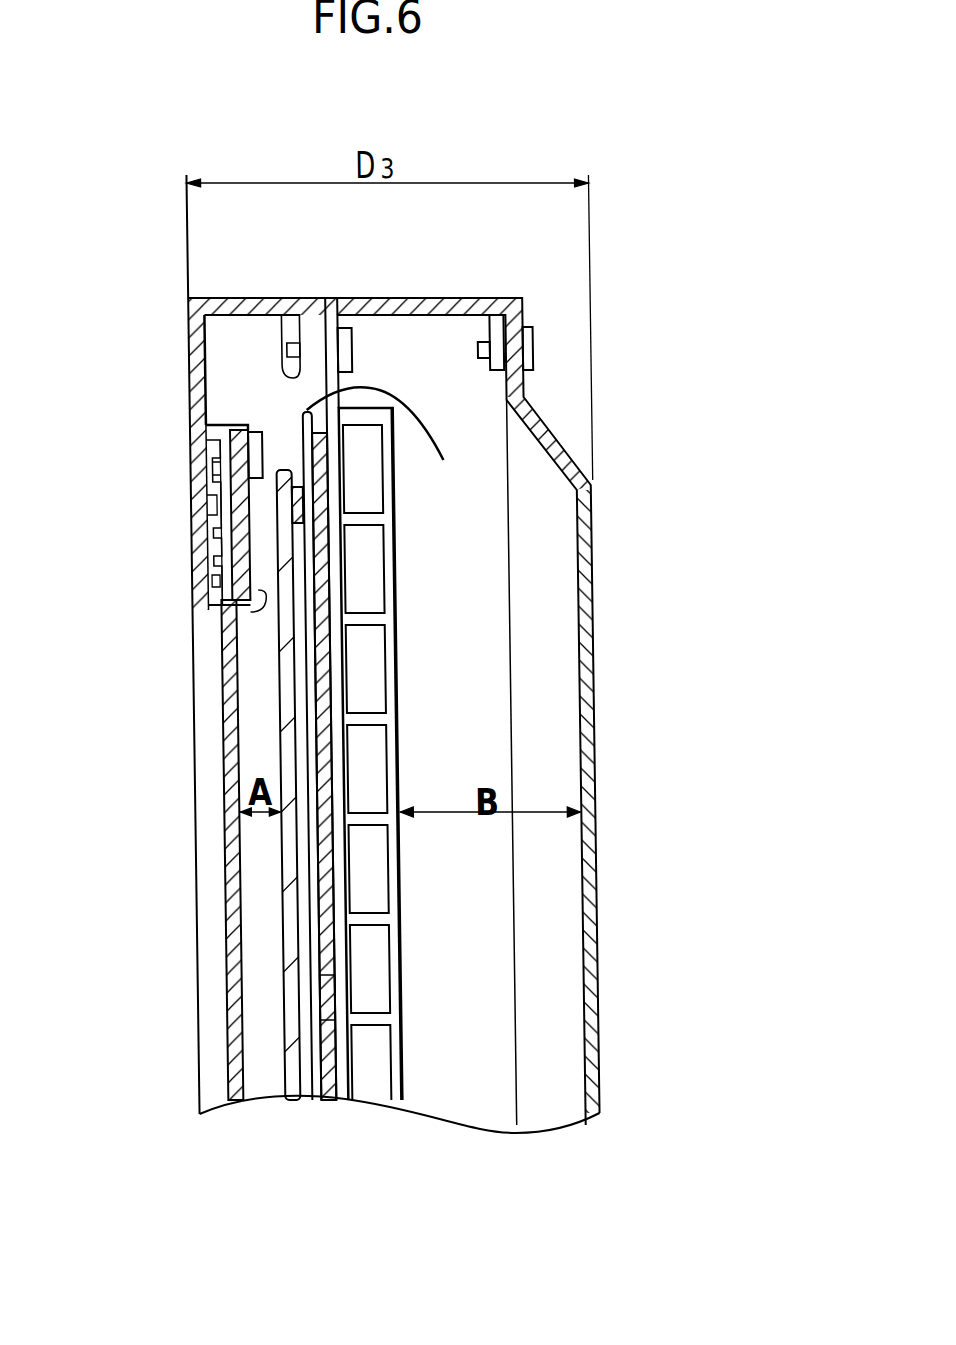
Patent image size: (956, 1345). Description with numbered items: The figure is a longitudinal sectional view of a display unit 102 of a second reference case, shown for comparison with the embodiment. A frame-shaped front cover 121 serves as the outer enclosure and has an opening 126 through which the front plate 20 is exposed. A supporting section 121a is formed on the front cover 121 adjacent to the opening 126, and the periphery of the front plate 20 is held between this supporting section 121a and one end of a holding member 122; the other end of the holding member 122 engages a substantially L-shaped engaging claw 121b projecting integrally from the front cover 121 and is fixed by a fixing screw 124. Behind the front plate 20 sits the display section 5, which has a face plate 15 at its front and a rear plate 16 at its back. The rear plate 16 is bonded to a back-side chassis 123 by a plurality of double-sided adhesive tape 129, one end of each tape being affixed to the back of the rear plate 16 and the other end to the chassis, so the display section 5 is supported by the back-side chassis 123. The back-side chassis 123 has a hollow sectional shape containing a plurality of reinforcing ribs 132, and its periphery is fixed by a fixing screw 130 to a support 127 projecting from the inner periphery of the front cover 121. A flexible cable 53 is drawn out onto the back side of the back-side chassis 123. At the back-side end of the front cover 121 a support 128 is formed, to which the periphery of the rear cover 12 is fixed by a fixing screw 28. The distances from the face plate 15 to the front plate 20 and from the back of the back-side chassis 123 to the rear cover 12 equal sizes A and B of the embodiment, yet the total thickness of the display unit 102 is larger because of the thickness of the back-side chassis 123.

The display section 5 is at (266, 868).
The rear cover 12 is at (583, 1078).
The face plate 15 is at (296, 1072).
The rear plate 16 is at (313, 1018).
The front plate 20 is at (215, 773).
The fixing screw 28 is at (528, 352).
The flexible cable 53 is at (380, 394).
The display unit 102 is at (462, 1311).
The front cover 121 is at (259, 432).
The supporting section 121a is at (198, 512).
The engaging claw 121b is at (236, 425).
The holding member 122 is at (254, 600).
The back-side chassis 123 is at (389, 984).
The fixing screw 124 is at (192, 363).
The opening 126 is at (224, 598).
The support 127 is at (279, 304).
The support 128 is at (497, 371).
The double-sided adhesive tape 129 is at (290, 590).
The fixing screw 130 is at (328, 310).
The reinforcing ribs 132 is at (378, 719).